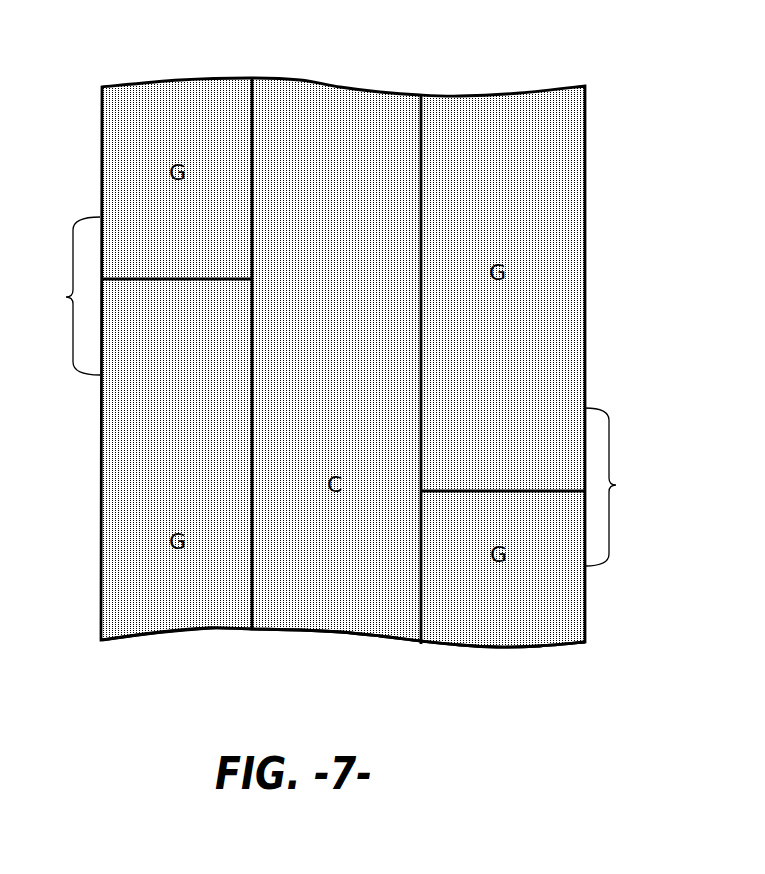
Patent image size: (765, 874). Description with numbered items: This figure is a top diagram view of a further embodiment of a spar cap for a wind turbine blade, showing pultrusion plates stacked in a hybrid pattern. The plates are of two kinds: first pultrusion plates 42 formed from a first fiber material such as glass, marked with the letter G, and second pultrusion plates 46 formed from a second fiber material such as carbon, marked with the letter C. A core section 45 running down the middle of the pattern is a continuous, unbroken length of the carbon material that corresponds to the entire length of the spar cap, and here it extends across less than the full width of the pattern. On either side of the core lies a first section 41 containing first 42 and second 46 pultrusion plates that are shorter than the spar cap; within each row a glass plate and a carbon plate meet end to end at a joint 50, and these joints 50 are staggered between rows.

The first section 41 is at (66, 297).
The first pultrusion plates 42 is at (585, 330).
The core section 45 is at (348, 387).
The second pultrusion plates 46 is at (312, 631).
The joint 50 is at (230, 278).